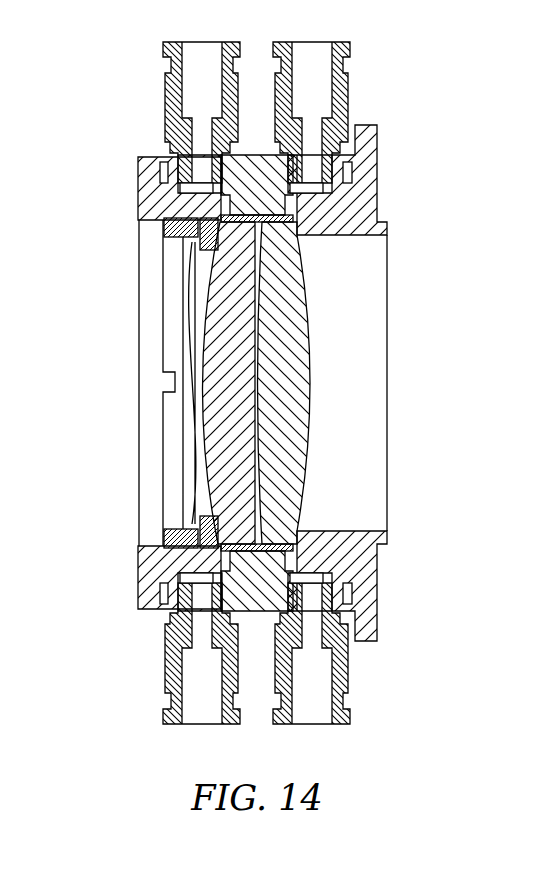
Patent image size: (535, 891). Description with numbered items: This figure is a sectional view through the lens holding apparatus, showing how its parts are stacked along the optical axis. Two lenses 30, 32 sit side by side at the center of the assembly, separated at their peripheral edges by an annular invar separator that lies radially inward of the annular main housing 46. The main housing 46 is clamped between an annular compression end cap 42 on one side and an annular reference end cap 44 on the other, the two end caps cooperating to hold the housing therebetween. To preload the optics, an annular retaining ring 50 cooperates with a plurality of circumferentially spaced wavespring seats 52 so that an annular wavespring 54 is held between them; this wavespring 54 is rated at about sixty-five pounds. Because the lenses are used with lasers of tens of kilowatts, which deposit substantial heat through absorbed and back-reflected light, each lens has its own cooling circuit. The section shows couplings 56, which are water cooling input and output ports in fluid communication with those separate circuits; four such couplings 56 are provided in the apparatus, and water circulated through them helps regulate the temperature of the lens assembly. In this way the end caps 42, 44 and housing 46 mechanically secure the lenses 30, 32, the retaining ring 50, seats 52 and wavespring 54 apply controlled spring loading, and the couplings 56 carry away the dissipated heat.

The lens 30 is at (277, 305).
The lens 32 is at (217, 421).
The annular compression end cap 42 is at (150, 171).
The annular reference end cap 44 is at (367, 180).
The annular main housing 46 is at (257, 155).
The annular retaining ring 50 is at (175, 334).
The wavespring seats 52 is at (208, 221).
The annular wavespring 54 is at (192, 277).
The couplings 56 is at (165, 103).